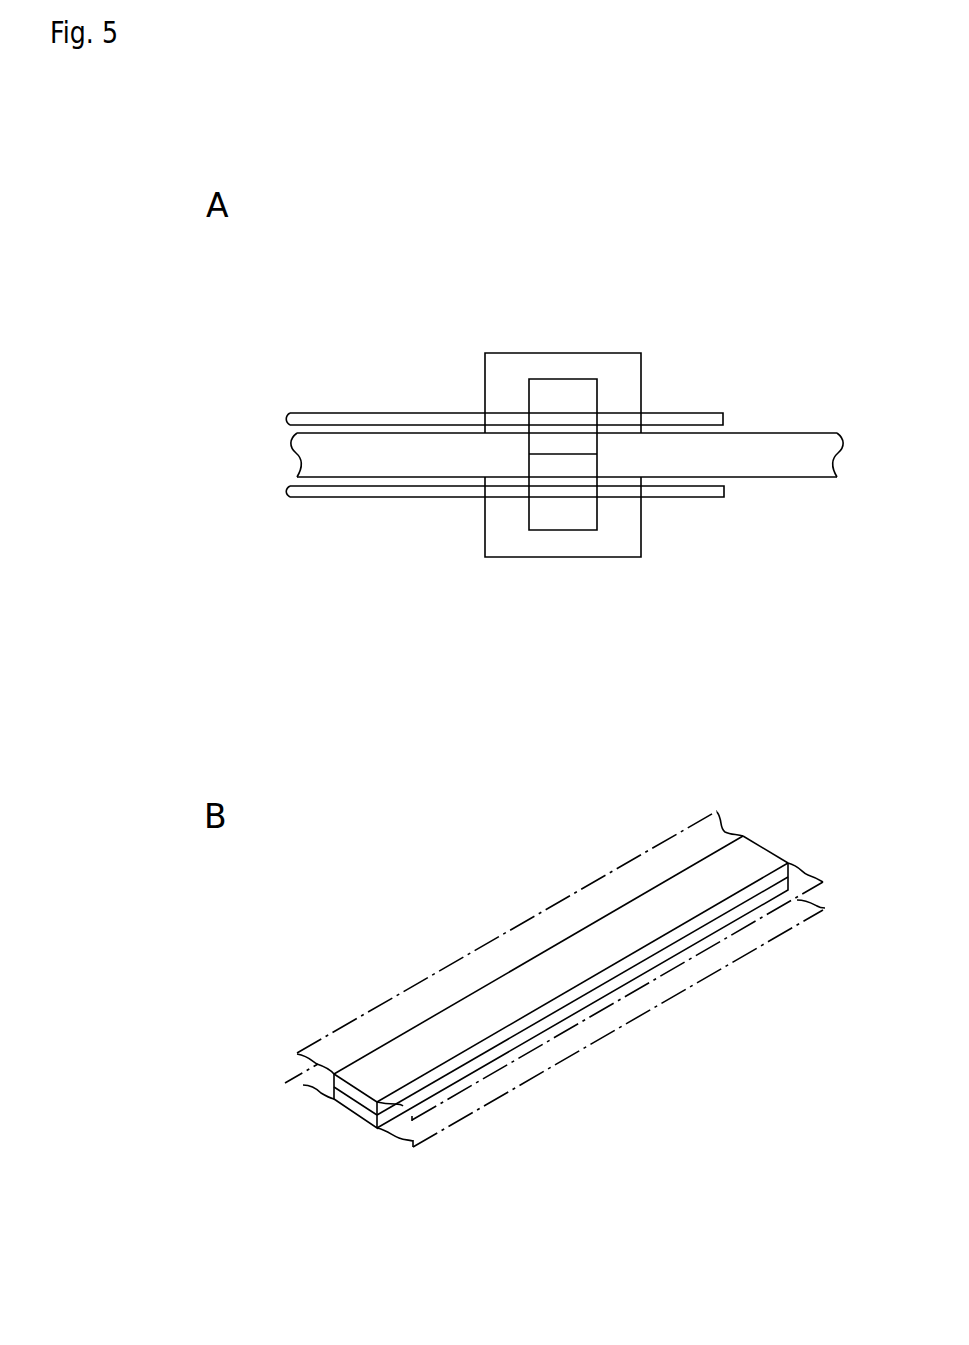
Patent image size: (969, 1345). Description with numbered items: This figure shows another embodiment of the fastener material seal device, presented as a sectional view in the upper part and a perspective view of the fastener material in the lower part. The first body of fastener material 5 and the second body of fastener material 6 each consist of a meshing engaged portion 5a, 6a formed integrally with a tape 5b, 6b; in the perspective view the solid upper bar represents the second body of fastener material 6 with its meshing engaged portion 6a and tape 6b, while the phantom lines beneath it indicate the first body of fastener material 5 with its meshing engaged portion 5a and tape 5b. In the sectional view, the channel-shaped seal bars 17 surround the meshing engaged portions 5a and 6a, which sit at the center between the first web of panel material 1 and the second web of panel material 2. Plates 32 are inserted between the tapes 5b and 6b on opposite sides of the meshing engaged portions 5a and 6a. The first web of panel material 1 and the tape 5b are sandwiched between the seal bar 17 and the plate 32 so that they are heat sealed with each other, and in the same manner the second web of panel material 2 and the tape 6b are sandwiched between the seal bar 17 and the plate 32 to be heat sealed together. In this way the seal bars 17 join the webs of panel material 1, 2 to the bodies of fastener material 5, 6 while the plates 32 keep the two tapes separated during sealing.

The first web of panel material 1 is at (360, 492).
The second web of panel material 2 is at (427, 418).
The plate 32 is at (352, 445).
The seal bar 17 is at (563, 365).
The first body of fastener material 5 is at (692, 987).
The meshing engaged portion 5a is at (570, 468).
The tape 5b is at (507, 482).
The second body of fastener material 6 is at (647, 850).
The meshing engaged portion 6a is at (543, 442).
The tape 6b is at (610, 430).